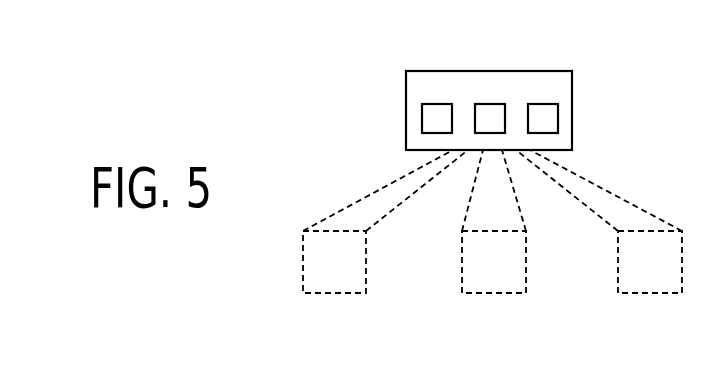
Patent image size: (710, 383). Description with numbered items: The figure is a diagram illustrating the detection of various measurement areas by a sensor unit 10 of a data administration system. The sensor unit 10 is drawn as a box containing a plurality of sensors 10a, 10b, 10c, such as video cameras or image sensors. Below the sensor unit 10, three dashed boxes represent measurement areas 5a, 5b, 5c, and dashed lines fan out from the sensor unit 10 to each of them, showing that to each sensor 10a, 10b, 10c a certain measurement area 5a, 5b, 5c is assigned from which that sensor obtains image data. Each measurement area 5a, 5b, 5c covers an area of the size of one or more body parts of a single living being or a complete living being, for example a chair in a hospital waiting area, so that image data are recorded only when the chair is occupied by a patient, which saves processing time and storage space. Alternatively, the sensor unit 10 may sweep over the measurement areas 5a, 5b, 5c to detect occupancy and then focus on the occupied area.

The sensor unit 10 is at (573, 112).
The sensor 10a is at (438, 104).
The sensor 10b is at (495, 104).
The sensor 10c is at (542, 104).
The measurement area 5a is at (331, 293).
The measurement area 5b is at (489, 293).
The measurement area 5c is at (652, 293).